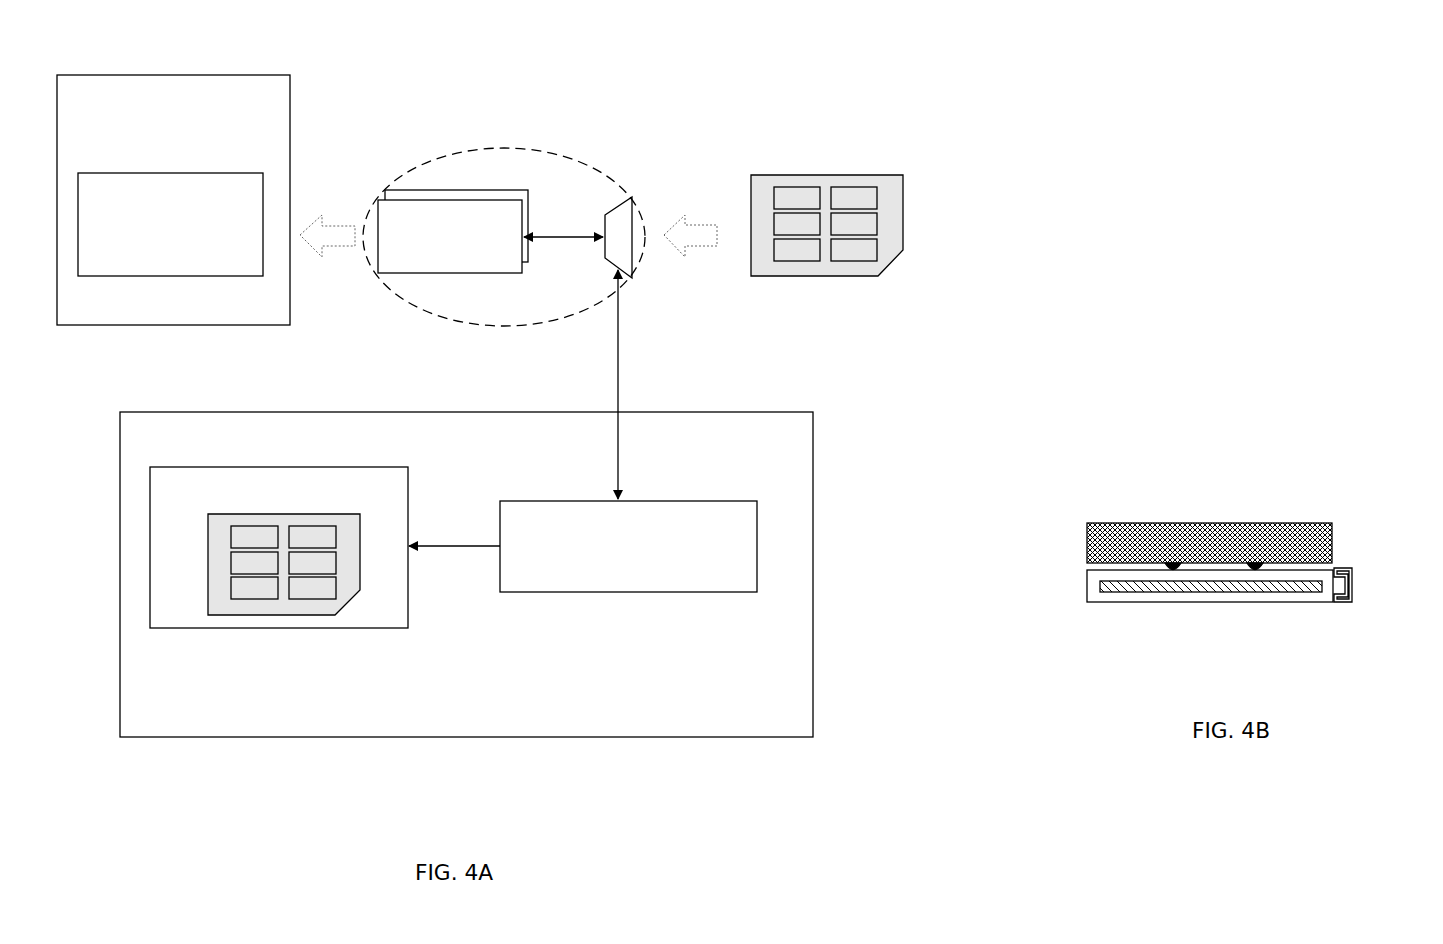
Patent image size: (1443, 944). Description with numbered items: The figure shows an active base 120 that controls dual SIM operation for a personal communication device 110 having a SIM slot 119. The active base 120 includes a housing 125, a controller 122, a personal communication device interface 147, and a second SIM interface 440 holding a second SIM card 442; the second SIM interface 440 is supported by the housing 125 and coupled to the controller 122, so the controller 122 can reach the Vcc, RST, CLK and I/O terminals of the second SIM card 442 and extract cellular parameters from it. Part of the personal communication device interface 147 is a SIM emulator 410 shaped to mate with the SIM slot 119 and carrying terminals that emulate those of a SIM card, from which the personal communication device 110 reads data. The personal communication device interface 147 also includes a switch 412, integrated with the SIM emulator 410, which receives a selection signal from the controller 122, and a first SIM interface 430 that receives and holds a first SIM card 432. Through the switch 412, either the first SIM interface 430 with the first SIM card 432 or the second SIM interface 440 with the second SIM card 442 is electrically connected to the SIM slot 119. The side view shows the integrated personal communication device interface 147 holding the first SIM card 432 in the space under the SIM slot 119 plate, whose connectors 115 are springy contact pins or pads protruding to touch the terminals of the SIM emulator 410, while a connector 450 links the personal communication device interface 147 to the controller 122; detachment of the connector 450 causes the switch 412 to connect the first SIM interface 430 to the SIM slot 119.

In FIG. 4A, the personal communication device 110 is at (173, 200).
In FIG. 4A, the SIM slot 119 is at (170, 224).
In FIG. 4B, the SIM slot 119 is at (1212, 494).
In FIG. 4A, the personal communication device interface 147 is at (520, 148).
In FIG. 4B, the personal communication device interface 147 is at (1095, 600).
In FIG. 4A, the first SIM interface 430 is at (447, 190).
In FIG. 4A, the SIM emulator 410 is at (450, 236).
In FIG. 4A, the switch 412 is at (618, 203).
In FIG. 4A, the first SIM card 432 is at (825, 175).
In FIG. 4B, the first SIM card 432 is at (1260, 593).
In FIG. 4A, the active base 120 is at (466, 574).
In FIG. 4A, the housing 125 is at (622, 737).
In FIG. 4A, the second SIM interface 440 is at (279, 547).
In FIG. 4A, the second SIM card 442 is at (280, 615).
In FIG. 4A, the controller 122 is at (628, 546).
In FIG. 4B, the connectors 115 is at (1170, 565).
In FIG. 4B, the connector 450 is at (1343, 568).